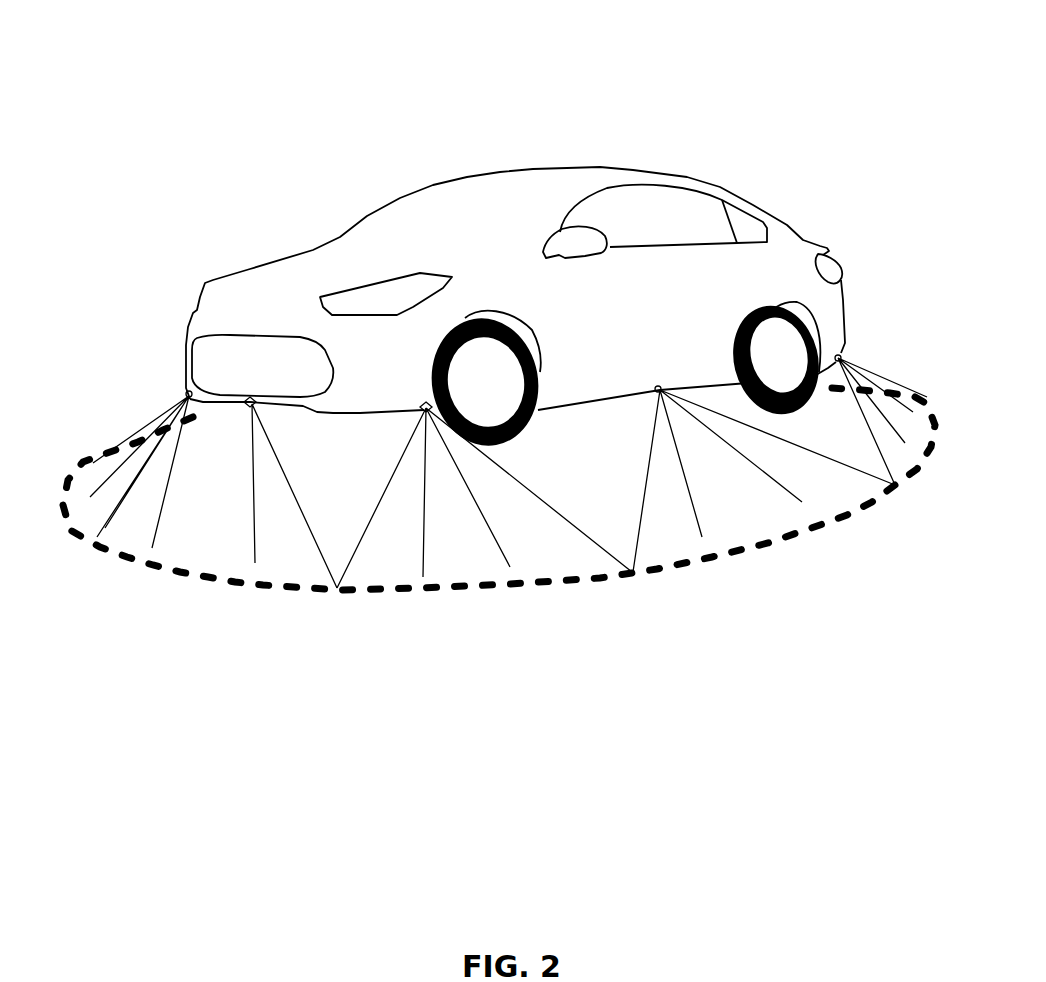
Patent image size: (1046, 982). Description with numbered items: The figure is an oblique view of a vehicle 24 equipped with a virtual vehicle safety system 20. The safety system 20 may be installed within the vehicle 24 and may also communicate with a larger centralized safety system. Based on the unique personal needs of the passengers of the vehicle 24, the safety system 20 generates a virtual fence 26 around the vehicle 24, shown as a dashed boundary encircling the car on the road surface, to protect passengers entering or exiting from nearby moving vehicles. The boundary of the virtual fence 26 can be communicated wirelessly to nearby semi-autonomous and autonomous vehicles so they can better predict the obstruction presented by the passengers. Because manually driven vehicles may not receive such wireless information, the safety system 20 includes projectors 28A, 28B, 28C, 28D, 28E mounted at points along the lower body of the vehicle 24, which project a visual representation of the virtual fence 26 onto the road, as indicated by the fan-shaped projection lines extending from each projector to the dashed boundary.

The virtual vehicle safety system 20 is at (538, 66).
The vehicle 24 is at (335, 244).
The virtual fence 26 is at (750, 548).
The projector 28A is at (184, 392).
The projector 28B is at (258, 405).
The projector 28C is at (422, 403).
The projector 28D is at (655, 386).
The projector 28E is at (841, 357).